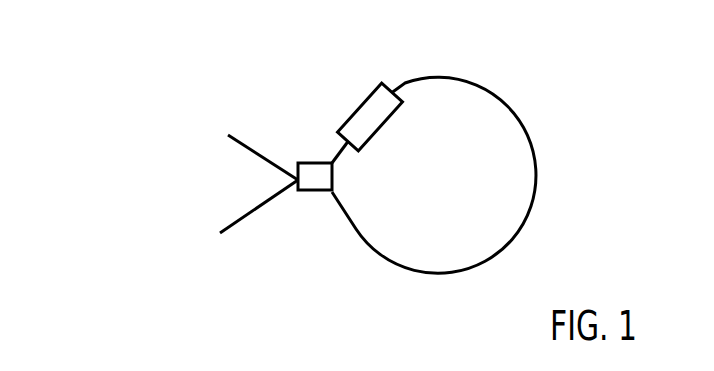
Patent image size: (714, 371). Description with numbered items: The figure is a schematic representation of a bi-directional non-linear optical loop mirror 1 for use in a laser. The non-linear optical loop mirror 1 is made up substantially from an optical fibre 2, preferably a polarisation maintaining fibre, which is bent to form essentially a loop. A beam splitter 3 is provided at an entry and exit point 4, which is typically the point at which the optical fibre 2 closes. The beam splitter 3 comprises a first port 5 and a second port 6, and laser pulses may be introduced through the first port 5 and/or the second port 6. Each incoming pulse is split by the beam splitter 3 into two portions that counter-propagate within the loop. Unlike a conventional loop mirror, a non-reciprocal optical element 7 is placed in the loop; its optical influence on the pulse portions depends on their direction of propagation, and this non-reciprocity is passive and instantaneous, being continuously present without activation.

The non-linear optical loop mirror 1 is at (279, 51).
The optical fibre 2 is at (517, 233).
The beam splitter 3 is at (315, 180).
The entry and exit point 4 is at (304, 155).
The first port 5 is at (253, 150).
The second port 6 is at (245, 217).
The non-reciprocal optical element 7 is at (362, 117).